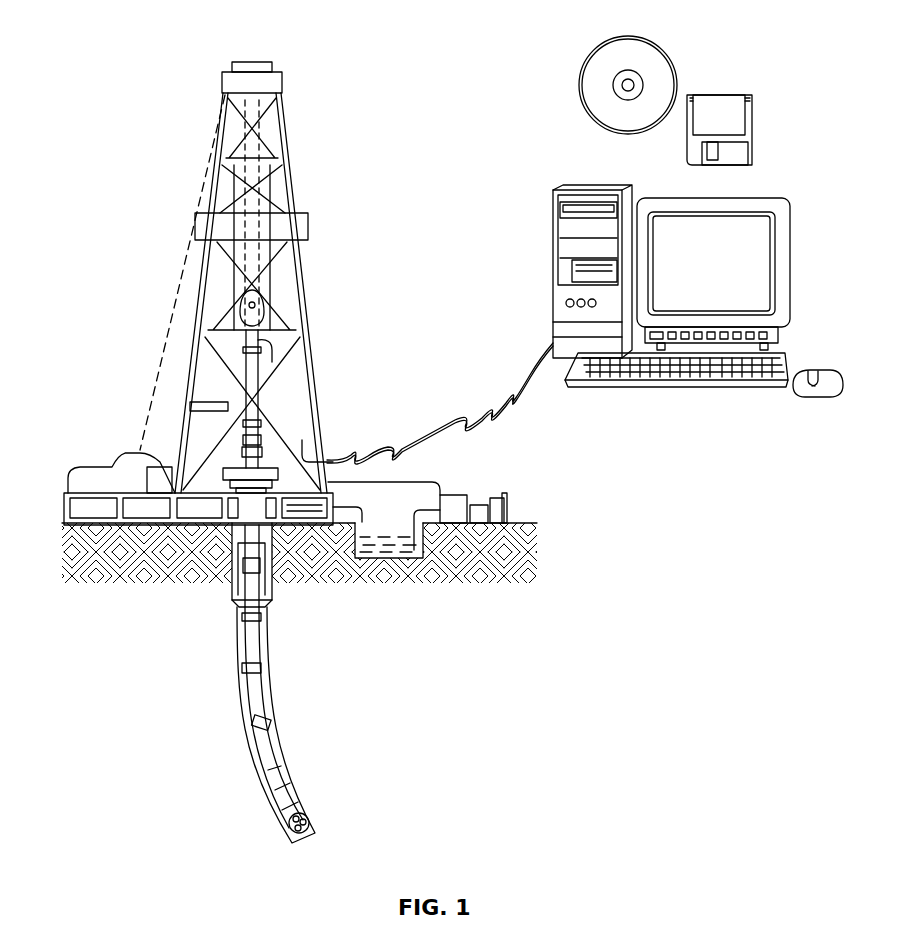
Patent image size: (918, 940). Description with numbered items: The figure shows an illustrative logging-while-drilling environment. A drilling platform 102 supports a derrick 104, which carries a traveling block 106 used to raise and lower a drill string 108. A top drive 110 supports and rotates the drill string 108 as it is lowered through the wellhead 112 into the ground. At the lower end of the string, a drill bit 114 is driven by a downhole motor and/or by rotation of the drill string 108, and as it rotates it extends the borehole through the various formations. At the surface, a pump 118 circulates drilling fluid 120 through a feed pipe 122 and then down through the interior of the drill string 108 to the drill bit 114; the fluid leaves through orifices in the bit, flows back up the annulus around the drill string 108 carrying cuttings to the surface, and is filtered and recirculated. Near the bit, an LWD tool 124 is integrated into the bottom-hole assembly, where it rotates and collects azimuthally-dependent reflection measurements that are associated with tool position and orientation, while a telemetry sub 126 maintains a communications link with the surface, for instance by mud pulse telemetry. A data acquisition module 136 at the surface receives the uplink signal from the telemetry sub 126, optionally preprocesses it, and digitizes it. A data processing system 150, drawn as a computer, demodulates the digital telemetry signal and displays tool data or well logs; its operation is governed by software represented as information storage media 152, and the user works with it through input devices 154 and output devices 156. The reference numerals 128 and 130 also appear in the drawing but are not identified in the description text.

The drilling platform 102 is at (176, 57).
The derrick 104 is at (285, 170).
The traveling block 106 is at (288, 290).
The drill string 108 is at (257, 643).
The top drive 110 is at (255, 375).
The wellhead 112 is at (232, 473).
The drill bit 114 is at (290, 826).
The pump 118 is at (461, 495).
The drilling fluid 120 is at (392, 540).
The feed pipe 122 is at (382, 482).
The LWD tool 124 is at (300, 790).
The telemetry sub 126 is at (268, 790).
The swivel 128 is at (247, 425).
The tool joint 130 is at (246, 668).
The data acquisition module 136 is at (142, 480).
The data processing system 150 is at (590, 185).
The information storage media 152 is at (630, 36).
The input devices 154 is at (797, 368).
The output devices 156 is at (728, 190).